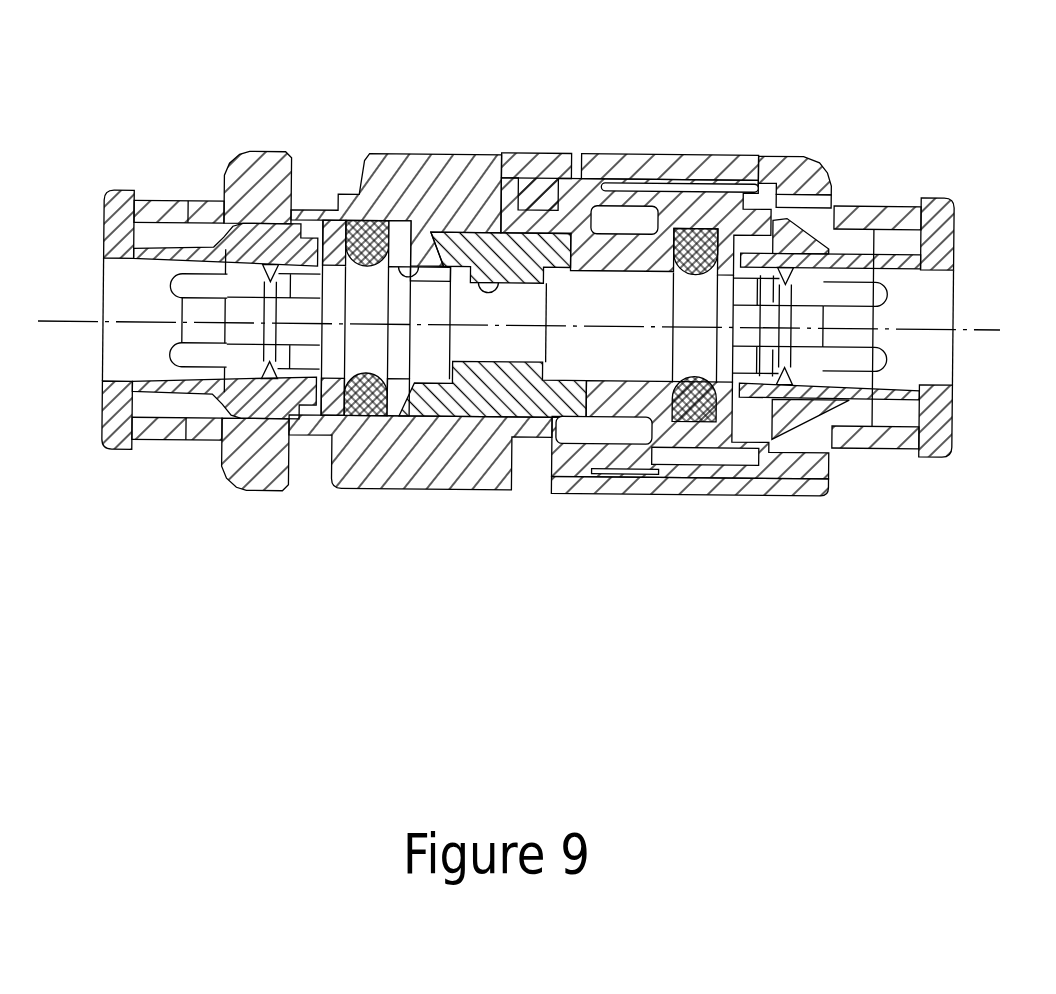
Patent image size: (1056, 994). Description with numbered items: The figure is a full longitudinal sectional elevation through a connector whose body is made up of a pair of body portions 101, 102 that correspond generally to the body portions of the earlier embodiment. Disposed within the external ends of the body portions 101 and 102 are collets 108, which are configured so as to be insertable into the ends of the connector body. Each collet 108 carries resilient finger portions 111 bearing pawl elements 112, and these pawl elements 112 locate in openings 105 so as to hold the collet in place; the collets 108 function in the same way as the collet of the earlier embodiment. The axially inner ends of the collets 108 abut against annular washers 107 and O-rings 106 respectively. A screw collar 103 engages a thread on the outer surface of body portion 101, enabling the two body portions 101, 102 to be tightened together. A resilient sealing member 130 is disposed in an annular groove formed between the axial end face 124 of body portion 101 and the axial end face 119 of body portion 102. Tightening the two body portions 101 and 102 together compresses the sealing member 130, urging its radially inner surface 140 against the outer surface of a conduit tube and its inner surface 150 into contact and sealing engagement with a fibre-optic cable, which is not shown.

The body portion 101 is at (374, 152).
The body portion 102 is at (630, 403).
The screw collar 103 is at (707, 167).
The openings 105 is at (820, 178).
The O-ring 106 is at (336, 458).
The annular washer 107 is at (752, 447).
The collet 108 is at (116, 452).
The resilient finger portion 111 is at (160, 250).
The pawl element 112 is at (250, 252).
The axial end face 119 is at (587, 387).
The axial end face 124 is at (420, 387).
The resilient sealing member 130 is at (493, 393).
The radially inner surface 140 is at (408, 276).
The inner surface 150 is at (525, 238).